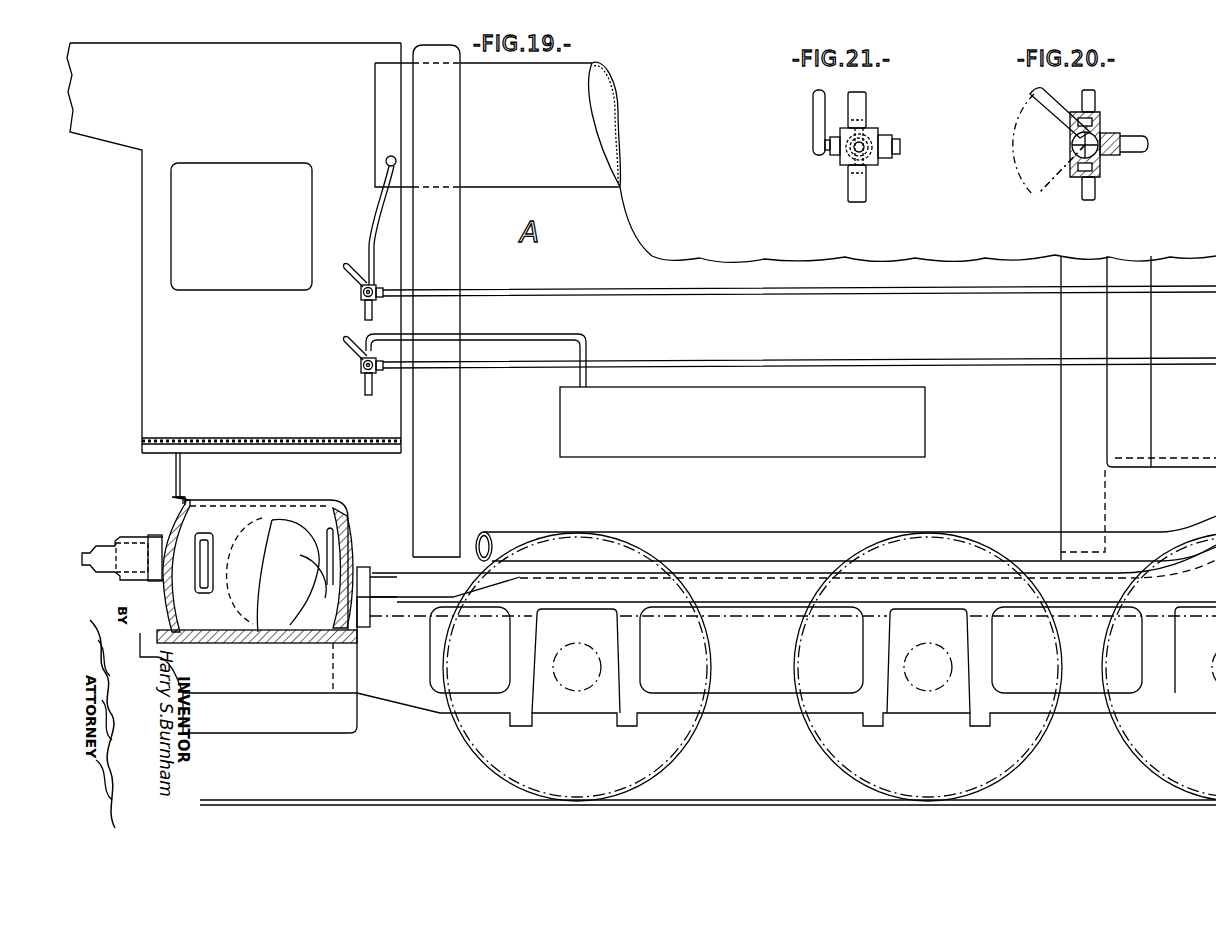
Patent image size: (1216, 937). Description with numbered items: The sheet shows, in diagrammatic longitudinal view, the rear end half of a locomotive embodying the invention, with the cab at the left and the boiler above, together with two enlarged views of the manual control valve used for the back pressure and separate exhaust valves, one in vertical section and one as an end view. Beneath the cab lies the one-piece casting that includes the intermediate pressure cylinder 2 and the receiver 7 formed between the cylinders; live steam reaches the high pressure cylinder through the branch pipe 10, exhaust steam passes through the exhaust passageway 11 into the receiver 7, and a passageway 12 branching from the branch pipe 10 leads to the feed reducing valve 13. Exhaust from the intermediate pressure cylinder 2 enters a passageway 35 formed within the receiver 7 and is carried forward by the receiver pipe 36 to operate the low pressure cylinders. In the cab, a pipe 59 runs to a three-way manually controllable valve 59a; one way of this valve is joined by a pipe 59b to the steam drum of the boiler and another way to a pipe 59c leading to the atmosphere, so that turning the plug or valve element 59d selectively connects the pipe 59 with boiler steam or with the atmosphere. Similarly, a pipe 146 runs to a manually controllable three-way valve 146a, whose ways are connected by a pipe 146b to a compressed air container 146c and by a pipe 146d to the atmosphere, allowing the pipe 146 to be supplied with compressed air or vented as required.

In FIG. 19, the intermediate pressure cylinder 2 is at (301, 722).
In FIG. 19, the receiver 7 is at (308, 506).
In FIG. 19, the branch pipe 10 is at (762, 541).
In FIG. 19, the exhaust passageway 11 is at (203, 596).
In FIG. 19, the passageway 12 is at (166, 521).
In FIG. 19, the feed reducing valve 13 is at (115, 539).
In FIG. 19, the passageway 35 is at (298, 621).
In FIG. 19, the receiver pipe 36 is at (386, 584).
In FIG. 19, the pipe 59 is at (764, 294).
In FIG. 20, the pipe 59 is at (1130, 139).
In FIG. 19, the three-way manually controllable valve 59a is at (360, 298).
In FIG. 21, the three-way manually controllable valve 59a is at (840, 160).
In FIG. 20, the three-way manually controllable valve 59a is at (1107, 158).
In FIG. 19, the pipe 59b is at (373, 213).
In FIG. 20, the pipe 59b is at (1096, 101).
In FIG. 19, the pipe 59c is at (374, 314).
In FIG. 20, the pipe 59c is at (1095, 189).
In FIG. 20, the plug or valve element 59d is at (1080, 160).
In FIG. 19, the pipe 146 is at (854, 362).
In FIG. 19, the manually controllable three-way valve 146a is at (356, 373).
In FIG. 19, the pipe 146b is at (480, 341).
In FIG. 19, the compressed air container 146c is at (742, 422).
In FIG. 19, the pipe 146d is at (374, 389).